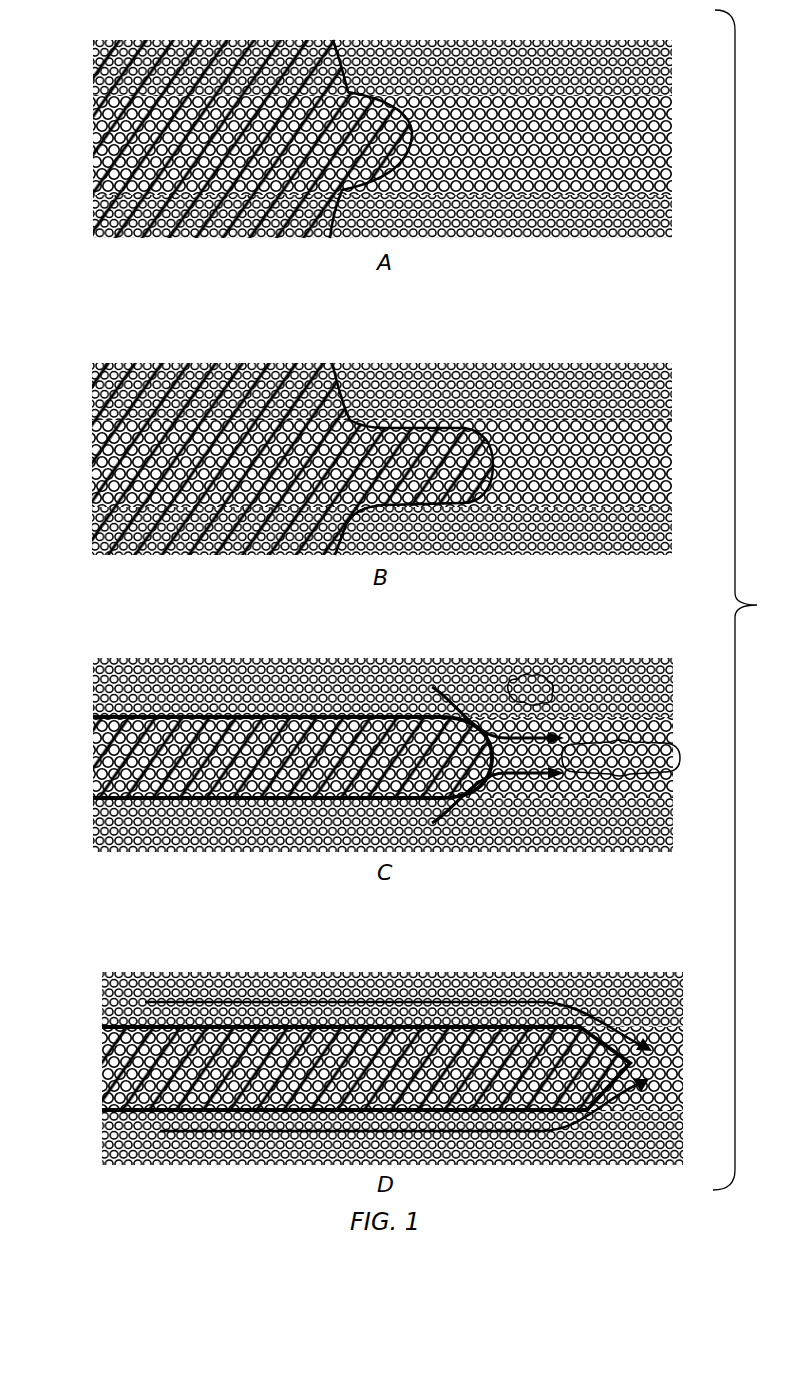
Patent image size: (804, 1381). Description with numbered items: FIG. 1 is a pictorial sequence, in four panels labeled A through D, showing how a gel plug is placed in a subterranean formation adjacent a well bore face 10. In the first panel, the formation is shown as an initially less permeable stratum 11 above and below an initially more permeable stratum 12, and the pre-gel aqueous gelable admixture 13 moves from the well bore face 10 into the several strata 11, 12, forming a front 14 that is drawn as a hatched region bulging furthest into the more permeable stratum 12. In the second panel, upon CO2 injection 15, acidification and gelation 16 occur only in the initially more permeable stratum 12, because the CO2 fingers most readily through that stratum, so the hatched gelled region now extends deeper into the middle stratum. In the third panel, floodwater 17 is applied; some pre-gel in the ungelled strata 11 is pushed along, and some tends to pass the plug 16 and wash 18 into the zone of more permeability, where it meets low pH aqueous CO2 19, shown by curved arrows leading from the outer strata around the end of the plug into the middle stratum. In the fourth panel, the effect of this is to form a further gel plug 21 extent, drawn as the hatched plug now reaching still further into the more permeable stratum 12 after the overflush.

The well bore face 10 is at (359, 623).
The initially less permeable stratum 11 is at (93, 70).
The initially more permeable stratum 12 is at (93, 140).
The pre-gel aqueous gelable admixture 13 is at (257, 20).
The front 14 is at (364, 42).
The CO2 injection 15 is at (238, 362).
The gelation plug 16 is at (417, 662).
The floodwater 17 is at (498, 755).
The wash 18 is at (511, 712).
The low pH aqueous CO2 19 is at (621, 758).
The further gel plug extent 21 is at (644, 938).